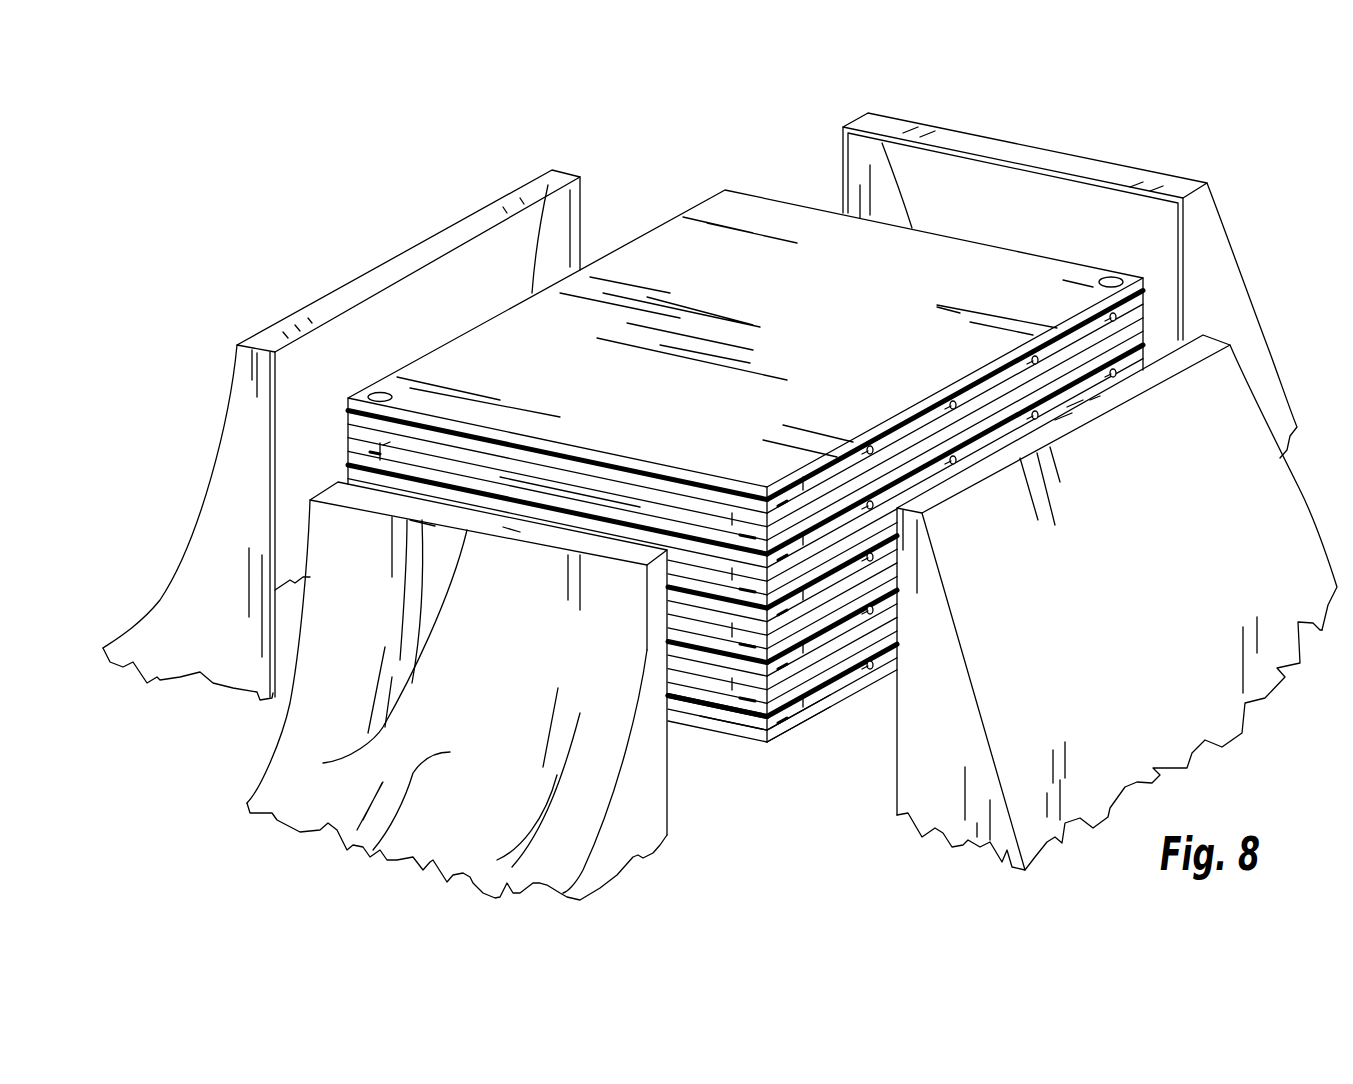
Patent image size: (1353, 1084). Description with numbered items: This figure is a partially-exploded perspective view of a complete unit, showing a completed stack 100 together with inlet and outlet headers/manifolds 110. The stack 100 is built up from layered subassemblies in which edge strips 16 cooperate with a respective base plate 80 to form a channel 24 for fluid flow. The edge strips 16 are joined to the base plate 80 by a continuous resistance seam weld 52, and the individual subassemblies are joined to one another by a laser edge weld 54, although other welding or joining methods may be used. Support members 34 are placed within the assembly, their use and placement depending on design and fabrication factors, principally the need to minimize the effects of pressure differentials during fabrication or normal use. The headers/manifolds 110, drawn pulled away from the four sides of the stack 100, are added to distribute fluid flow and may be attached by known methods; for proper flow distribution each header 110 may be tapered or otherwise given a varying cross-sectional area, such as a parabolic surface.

The stack 100 is at (762, 172).
The headers/manifolds 110 is at (447, 243).
The channel 24 is at (575, 493).
The support members 34 is at (870, 450).
The edge strips 16 is at (757, 720).
The continuous resistance seam weld 52 is at (783, 715).
The base plate 80 is at (775, 737).
The laser edge weld 54 is at (707, 704).